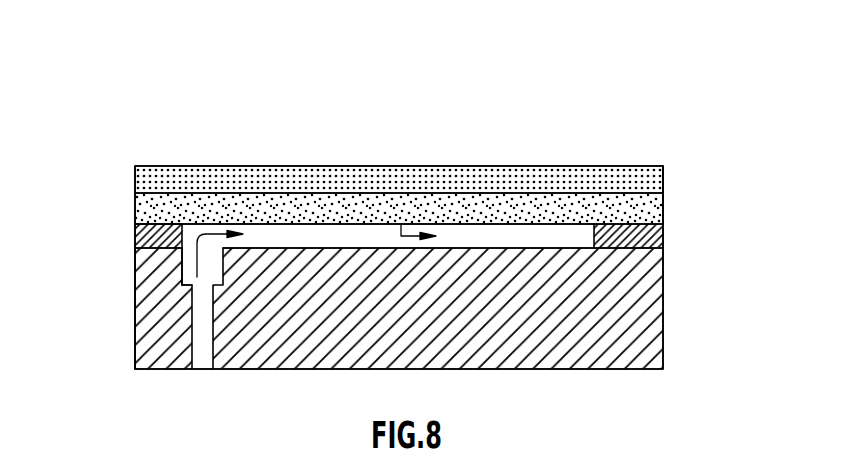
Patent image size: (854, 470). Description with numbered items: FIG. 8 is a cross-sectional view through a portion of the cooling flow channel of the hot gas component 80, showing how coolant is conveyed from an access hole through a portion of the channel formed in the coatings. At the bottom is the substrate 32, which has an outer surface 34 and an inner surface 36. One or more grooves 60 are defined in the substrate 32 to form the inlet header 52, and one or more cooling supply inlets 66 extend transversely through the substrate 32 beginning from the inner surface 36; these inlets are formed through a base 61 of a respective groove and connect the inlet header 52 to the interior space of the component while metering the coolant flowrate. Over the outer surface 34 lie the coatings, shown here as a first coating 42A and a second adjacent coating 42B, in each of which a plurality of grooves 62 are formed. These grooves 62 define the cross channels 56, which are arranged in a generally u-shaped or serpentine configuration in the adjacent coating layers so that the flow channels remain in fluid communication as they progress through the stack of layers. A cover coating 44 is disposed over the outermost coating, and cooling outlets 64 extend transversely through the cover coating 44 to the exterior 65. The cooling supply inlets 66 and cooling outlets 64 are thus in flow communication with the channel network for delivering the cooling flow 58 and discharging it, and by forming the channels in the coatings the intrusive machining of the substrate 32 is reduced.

The substrate 32 is at (632, 348).
The outer surface 34 is at (163, 245).
The inner surface 36 is at (232, 370).
The first coating 42A is at (647, 235).
The second adjacent coating 42B is at (170, 212).
The cover coating 44 is at (276, 176).
The inlet header 52 is at (197, 263).
The cross channels 56 is at (472, 238).
The cooling flow 58 is at (401, 225).
The grooves 60 is at (182, 280).
The base 61 is at (178, 290).
The grooves 62 is at (528, 237).
The cooling outlets 64 is at (632, 172).
The exterior 65 is at (234, 99).
The cooling supply inlets 66 is at (196, 330).
The hot gas component 80 is at (652, 71).